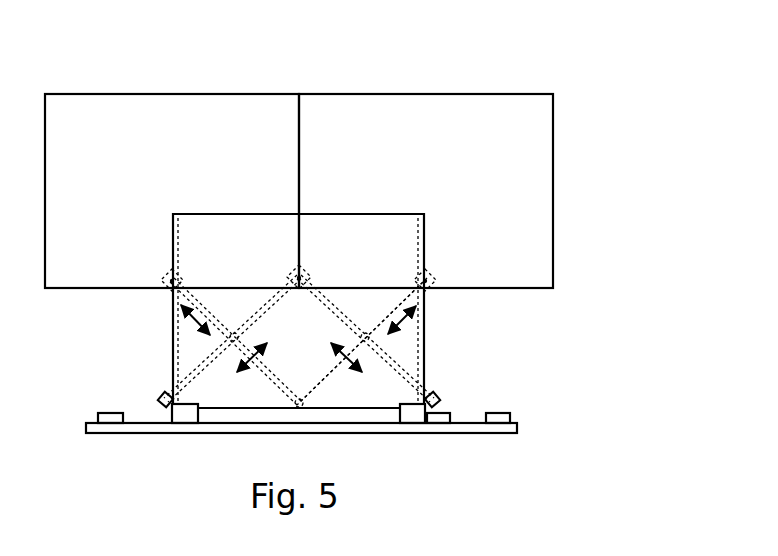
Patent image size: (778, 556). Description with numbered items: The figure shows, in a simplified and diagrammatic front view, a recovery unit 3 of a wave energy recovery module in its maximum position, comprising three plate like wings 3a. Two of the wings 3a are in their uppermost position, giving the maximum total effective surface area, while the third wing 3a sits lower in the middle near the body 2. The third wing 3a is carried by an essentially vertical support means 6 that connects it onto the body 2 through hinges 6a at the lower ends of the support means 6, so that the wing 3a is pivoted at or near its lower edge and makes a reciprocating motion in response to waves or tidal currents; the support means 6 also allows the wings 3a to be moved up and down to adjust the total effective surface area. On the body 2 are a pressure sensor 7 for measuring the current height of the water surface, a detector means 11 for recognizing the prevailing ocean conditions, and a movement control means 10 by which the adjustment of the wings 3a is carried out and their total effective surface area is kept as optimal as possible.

The body 2 is at (477, 430).
The recovery unit 3 is at (359, 219).
The plate like wing 3a is at (97, 100).
The support means 6 is at (418, 214).
The hinge 6a is at (182, 415).
The pressure sensor 7 is at (110, 418).
The movement control means 10 is at (498, 417).
The detector means 11 is at (442, 417).